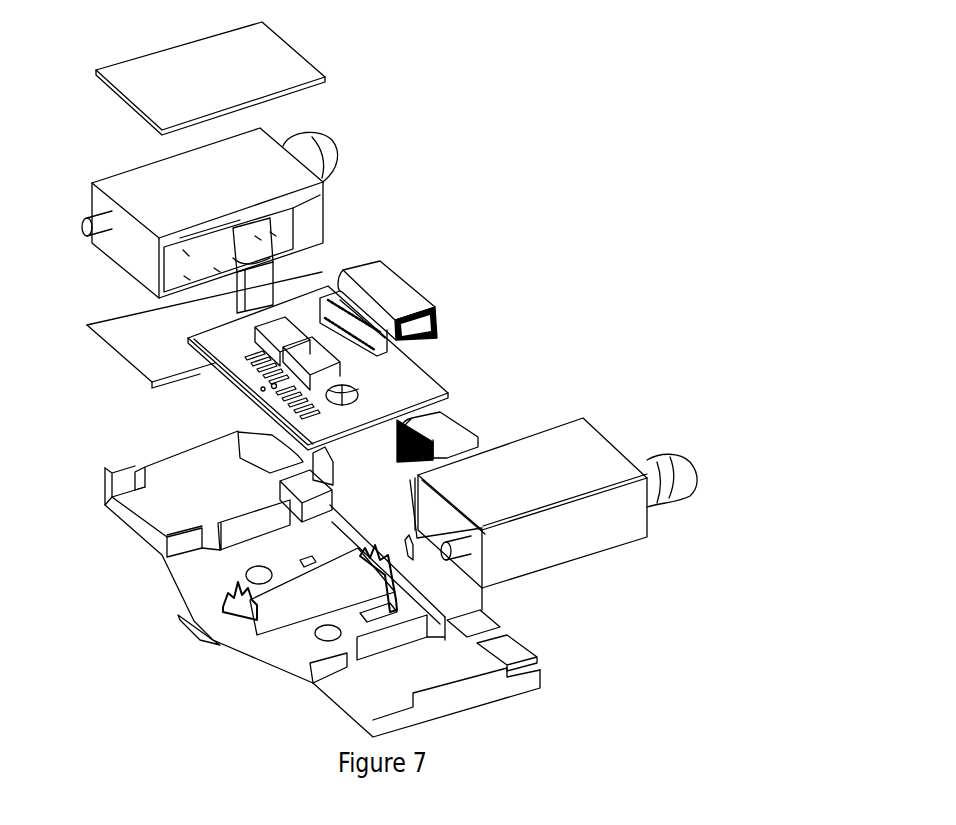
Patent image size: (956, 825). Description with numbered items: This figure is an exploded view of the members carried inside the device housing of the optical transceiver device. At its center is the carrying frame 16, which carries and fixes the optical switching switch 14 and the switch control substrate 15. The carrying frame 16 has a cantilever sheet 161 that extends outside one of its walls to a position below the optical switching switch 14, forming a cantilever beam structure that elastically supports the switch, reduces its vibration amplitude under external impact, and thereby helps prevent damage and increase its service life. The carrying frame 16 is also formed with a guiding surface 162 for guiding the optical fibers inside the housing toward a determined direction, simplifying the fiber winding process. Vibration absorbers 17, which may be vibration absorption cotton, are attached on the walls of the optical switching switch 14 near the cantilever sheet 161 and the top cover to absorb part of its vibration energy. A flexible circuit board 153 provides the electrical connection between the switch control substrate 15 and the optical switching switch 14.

The optical switching switch 14 is at (310, 203).
The switch control substrate 15 is at (423, 385).
The carrying frame 16 is at (270, 648).
The vibration absorber 17 is at (290, 63).
The flexible circuit board 153 is at (242, 243).
The cantilever sheet 161 is at (508, 653).
The guiding surface 162 is at (242, 458).